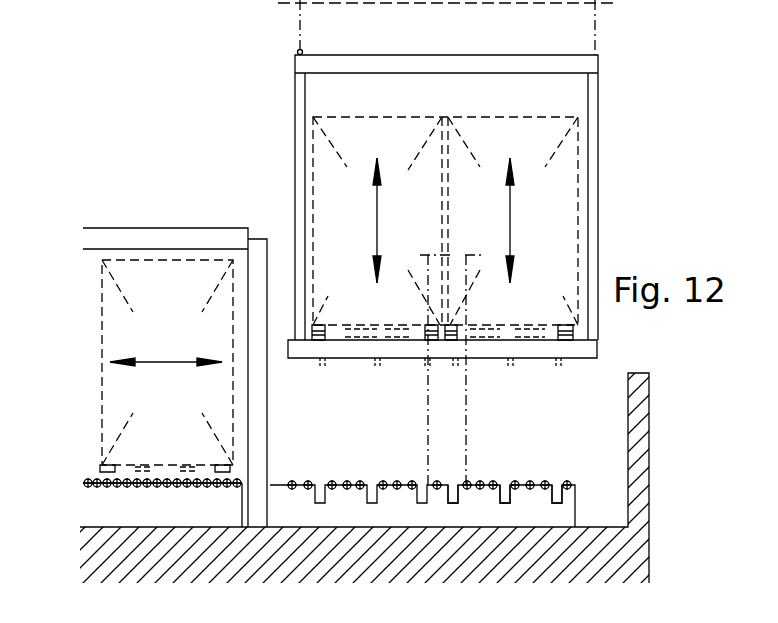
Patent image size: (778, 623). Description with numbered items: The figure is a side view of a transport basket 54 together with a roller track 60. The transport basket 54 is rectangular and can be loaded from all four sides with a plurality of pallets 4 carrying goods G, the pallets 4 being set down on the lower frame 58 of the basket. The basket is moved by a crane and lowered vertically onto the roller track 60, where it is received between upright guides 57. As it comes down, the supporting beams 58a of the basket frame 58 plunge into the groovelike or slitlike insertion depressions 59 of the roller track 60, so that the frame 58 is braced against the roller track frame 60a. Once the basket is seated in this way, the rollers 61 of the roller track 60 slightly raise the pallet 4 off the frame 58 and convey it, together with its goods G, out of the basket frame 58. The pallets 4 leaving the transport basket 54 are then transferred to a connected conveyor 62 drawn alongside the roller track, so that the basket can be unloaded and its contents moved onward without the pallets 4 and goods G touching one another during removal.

The pallet 4 is at (533, 325).
The transport basket 54 is at (599, 210).
The upright guide 57 is at (440, 410).
The frame 58 is at (597, 348).
The supporting beam 58a is at (557, 350).
The insertion depression 59 is at (557, 482).
The roller track 60 is at (578, 507).
The roller track frame 60a is at (390, 507).
The roller 61 is at (360, 482).
The connected conveyor 62 is at (120, 508).
The goods G is at (135, 396).